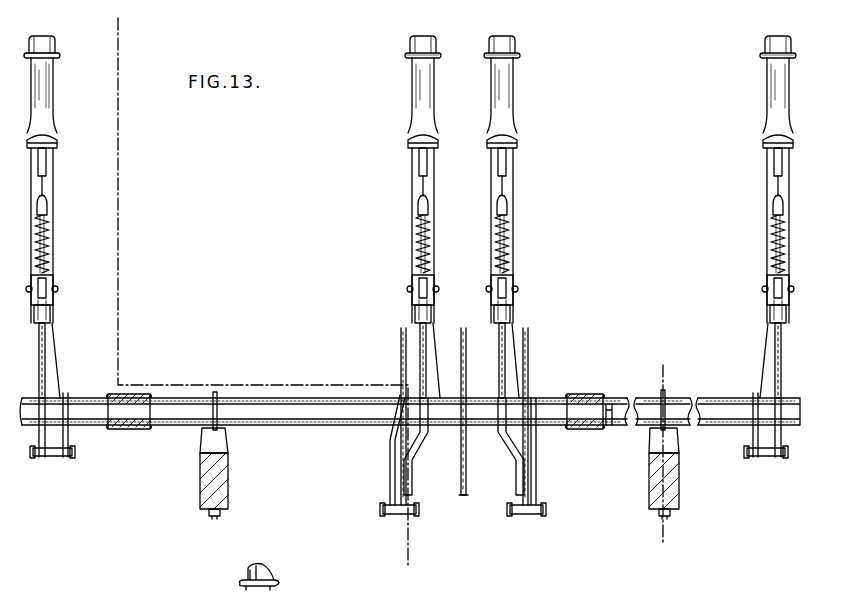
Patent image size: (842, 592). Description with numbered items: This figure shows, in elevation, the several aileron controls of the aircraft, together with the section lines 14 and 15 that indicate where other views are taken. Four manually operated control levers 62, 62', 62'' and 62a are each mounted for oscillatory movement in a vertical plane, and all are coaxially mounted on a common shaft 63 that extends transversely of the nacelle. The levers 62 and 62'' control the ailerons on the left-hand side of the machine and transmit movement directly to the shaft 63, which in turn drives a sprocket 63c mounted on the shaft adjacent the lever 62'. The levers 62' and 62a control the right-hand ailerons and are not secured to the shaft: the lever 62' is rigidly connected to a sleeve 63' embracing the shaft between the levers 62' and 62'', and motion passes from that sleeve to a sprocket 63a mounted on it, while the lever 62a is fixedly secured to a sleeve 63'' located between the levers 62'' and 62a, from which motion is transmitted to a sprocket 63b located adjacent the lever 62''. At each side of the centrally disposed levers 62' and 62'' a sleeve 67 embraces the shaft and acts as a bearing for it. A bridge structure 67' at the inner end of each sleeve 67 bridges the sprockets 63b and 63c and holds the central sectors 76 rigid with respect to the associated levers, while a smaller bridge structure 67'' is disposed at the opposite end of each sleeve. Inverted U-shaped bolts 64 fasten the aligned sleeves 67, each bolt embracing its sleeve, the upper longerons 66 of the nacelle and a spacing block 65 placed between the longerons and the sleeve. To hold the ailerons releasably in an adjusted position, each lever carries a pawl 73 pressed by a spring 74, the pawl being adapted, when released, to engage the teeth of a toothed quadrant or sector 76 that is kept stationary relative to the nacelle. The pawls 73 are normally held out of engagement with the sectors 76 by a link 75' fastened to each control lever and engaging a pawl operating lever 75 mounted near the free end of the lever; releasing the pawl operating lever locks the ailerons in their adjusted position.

The section line 14- 14 is at (118, 22).
The section line 15- 15 is at (661, 456).
The control lever 62 is at (54, 179).
The control lever 62' is at (399, 179).
The control lever 62'' is at (486, 179).
The control lever 62a is at (770, 98).
The shaft 63 is at (367, 389).
The sleeve 63' is at (446, 411).
The sleeve 63'' is at (611, 435).
The sprocket 63a is at (463, 497).
The sprocket 63b is at (515, 494).
The sprocket 63c is at (410, 488).
The inverted U-shaped bolt 64 is at (215, 392).
The spacing block 65 is at (224, 440).
The upper longeron 66 is at (228, 488).
The sleeve 67 is at (410, 391).
The bridge structure 67' is at (454, 422).
The bridge structure 67'' is at (413, 443).
The pawl 73 is at (436, 322).
The spring 74 is at (48, 242).
The pawl operating lever 75 is at (68, 85).
The link 75' is at (410, 45).
The quadrant or sector 76 is at (46, 344).